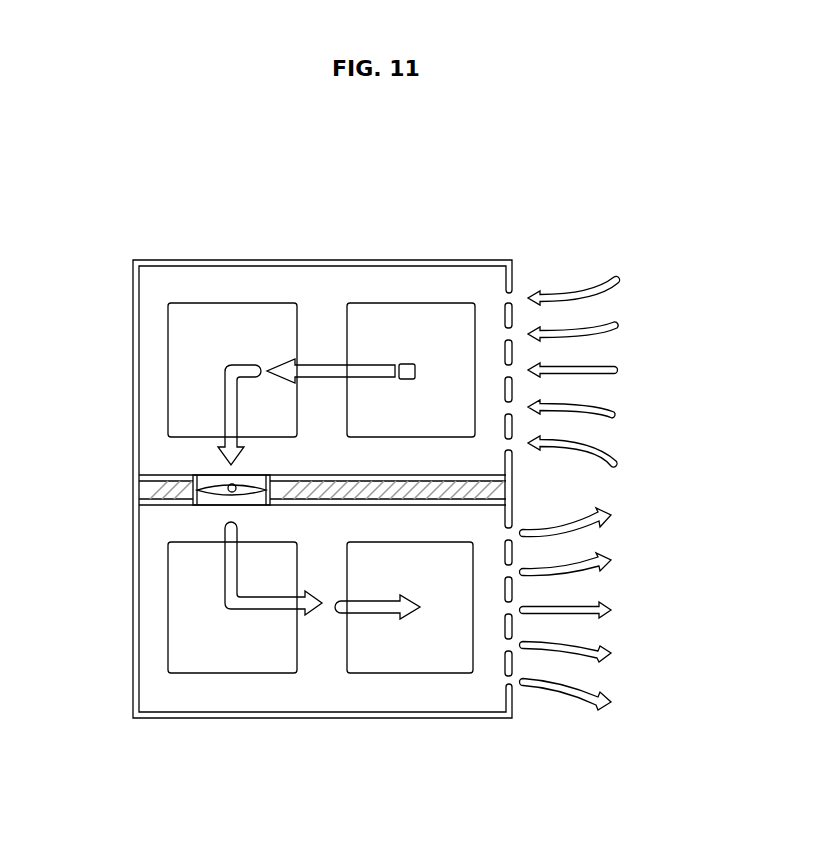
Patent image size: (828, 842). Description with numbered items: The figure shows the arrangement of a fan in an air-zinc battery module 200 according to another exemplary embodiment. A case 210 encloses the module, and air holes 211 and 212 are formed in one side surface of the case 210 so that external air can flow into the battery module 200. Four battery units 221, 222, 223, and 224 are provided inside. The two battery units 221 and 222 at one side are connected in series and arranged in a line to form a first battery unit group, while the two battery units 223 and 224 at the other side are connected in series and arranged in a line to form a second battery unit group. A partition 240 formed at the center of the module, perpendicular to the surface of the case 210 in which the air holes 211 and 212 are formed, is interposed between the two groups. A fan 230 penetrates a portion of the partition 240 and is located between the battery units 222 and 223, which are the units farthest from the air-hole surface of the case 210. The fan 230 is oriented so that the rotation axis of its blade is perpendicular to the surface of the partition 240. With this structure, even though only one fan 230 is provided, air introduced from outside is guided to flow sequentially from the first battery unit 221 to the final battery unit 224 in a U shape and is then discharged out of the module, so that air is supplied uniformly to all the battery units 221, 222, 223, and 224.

The air-zinc battery module 200 is at (588, 134).
The case 210 is at (331, 260).
The air hole 211 is at (508, 296).
The air hole 212 is at (510, 686).
The battery unit 221 is at (413, 323).
The battery unit 222 is at (238, 320).
The battery unit 223 is at (233, 650).
The battery unit 224 is at (410, 650).
The fan 230 is at (233, 497).
The partition 240 is at (512, 488).